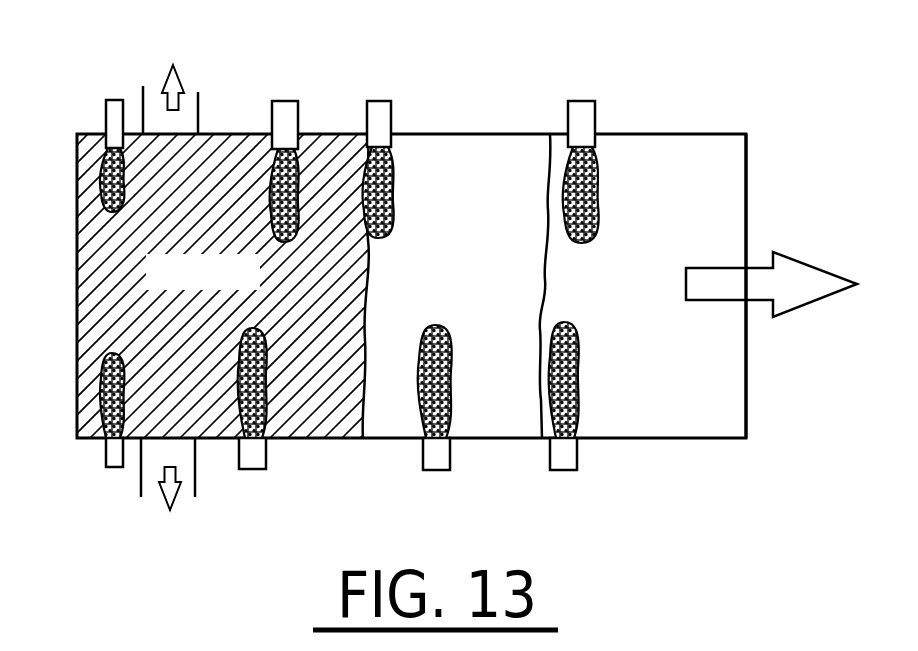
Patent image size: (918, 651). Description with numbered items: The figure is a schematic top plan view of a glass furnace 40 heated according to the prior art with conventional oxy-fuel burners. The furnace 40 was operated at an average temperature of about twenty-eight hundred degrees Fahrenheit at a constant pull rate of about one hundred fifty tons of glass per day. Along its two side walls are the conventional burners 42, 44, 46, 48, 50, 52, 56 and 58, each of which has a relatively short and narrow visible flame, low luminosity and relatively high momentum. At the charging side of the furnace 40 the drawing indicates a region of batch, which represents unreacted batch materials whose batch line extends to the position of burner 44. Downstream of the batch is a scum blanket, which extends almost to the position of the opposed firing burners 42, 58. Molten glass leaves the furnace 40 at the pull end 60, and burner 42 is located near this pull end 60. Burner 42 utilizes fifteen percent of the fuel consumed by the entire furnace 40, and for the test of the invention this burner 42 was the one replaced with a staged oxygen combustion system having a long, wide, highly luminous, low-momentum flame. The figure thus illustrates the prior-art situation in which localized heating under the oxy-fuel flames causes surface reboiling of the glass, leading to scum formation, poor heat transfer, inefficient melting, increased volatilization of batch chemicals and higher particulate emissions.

The glass furnace 40 is at (711, 136).
The burner 42 is at (568, 116).
The burner 44 is at (391, 110).
The burner 46 is at (298, 112).
The burner 48 is at (105, 116).
The burner 50 is at (105, 453).
The burner 52 is at (267, 457).
The burner 56 is at (450, 457).
The burner 58 is at (577, 462).
The pull end 60 is at (747, 205).